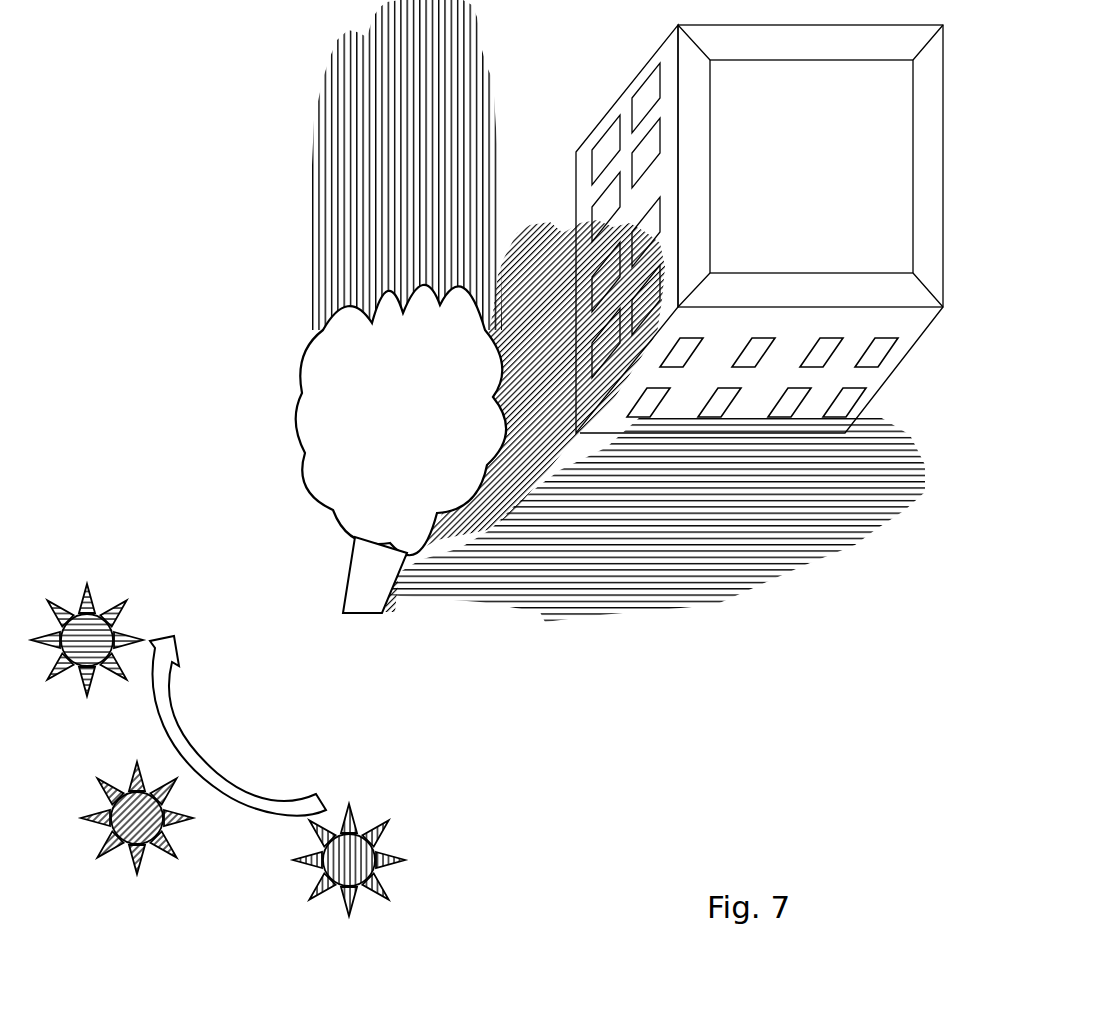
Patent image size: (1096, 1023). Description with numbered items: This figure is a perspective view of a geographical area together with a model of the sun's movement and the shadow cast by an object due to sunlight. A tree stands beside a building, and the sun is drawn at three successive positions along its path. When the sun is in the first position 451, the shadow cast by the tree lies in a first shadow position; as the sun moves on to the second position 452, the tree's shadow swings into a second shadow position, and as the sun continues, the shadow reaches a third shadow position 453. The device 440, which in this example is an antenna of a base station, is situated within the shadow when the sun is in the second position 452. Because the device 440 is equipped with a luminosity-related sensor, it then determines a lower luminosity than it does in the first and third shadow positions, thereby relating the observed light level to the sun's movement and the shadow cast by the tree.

The device 440 is at (652, 376).
The first position 451 is at (312, 160).
The second position 452 is at (528, 222).
The shadow cast by third sun position 453 is at (842, 541).